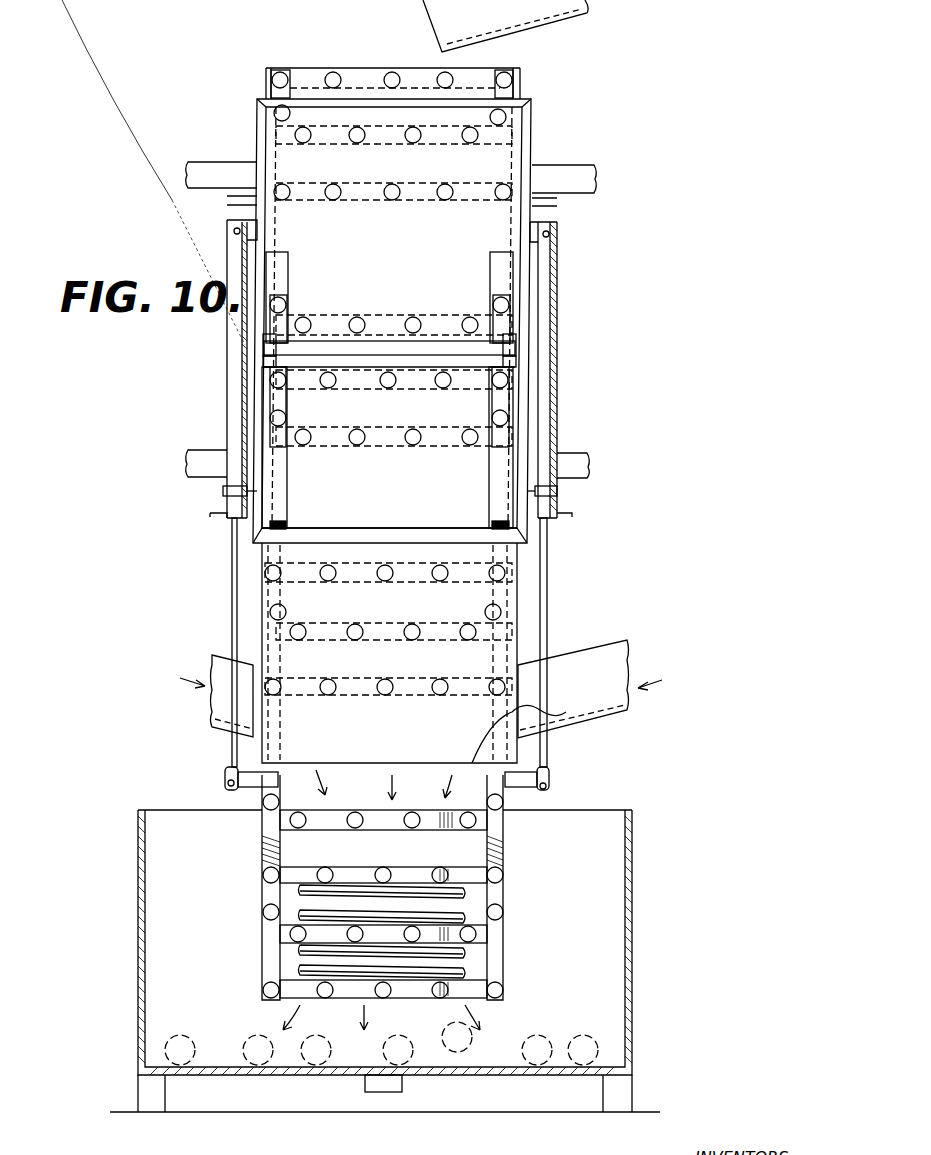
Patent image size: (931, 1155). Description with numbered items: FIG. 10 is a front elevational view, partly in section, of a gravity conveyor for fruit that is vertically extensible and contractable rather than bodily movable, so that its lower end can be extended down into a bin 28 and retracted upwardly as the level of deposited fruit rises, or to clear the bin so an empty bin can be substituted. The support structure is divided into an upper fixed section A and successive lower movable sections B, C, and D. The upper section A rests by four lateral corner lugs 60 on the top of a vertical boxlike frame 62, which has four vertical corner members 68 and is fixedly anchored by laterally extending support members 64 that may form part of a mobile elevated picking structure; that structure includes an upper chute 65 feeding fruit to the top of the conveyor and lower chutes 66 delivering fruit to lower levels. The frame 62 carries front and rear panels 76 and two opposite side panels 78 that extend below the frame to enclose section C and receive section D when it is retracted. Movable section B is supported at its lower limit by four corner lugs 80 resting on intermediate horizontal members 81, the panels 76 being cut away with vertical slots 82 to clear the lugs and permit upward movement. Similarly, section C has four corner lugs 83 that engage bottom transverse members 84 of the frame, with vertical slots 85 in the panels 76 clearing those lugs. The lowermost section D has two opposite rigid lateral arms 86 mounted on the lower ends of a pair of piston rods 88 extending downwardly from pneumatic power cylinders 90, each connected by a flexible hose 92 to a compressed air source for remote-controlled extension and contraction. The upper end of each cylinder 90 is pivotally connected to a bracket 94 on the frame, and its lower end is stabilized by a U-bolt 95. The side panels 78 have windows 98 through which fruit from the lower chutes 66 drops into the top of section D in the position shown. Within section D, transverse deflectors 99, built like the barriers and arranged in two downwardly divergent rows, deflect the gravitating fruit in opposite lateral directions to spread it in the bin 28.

The bin 28 is at (643, 945).
The lateral corner lugs 60 is at (272, 90).
The boxlike frame 62 is at (545, 139).
The support members 64 is at (200, 162).
The upper chute 65 is at (433, 8).
The lower chutes 66 is at (218, 658).
The vertical corner members 68 is at (258, 201).
The front and rear panels 76 is at (393, 172).
The side panels 78 is at (262, 563).
The corner lugs 80 is at (275, 339).
The intermediate horizontal members 81 is at (390, 348).
The vertical slots 82 is at (282, 255).
The corner lugs 83 is at (274, 524).
The bottom transverse members 84 is at (411, 530).
The vertical slots 85 is at (290, 460).
The rigid lateral arms 86 is at (252, 788).
The piston rods 88 is at (233, 598).
The pneumatic power cylinders 90 is at (232, 376).
The flexible hose 92 is at (213, 514).
The bracket 94 is at (228, 221).
The U-bolt 95 is at (224, 490).
The windows 98 is at (268, 741).
The transverse deflectors 99 is at (452, 918).
The upper fixed section A is at (543, 77).
The movable section B is at (392, 300).
The movable section C is at (352, 549).
The lowermost movable section D is at (345, 801).